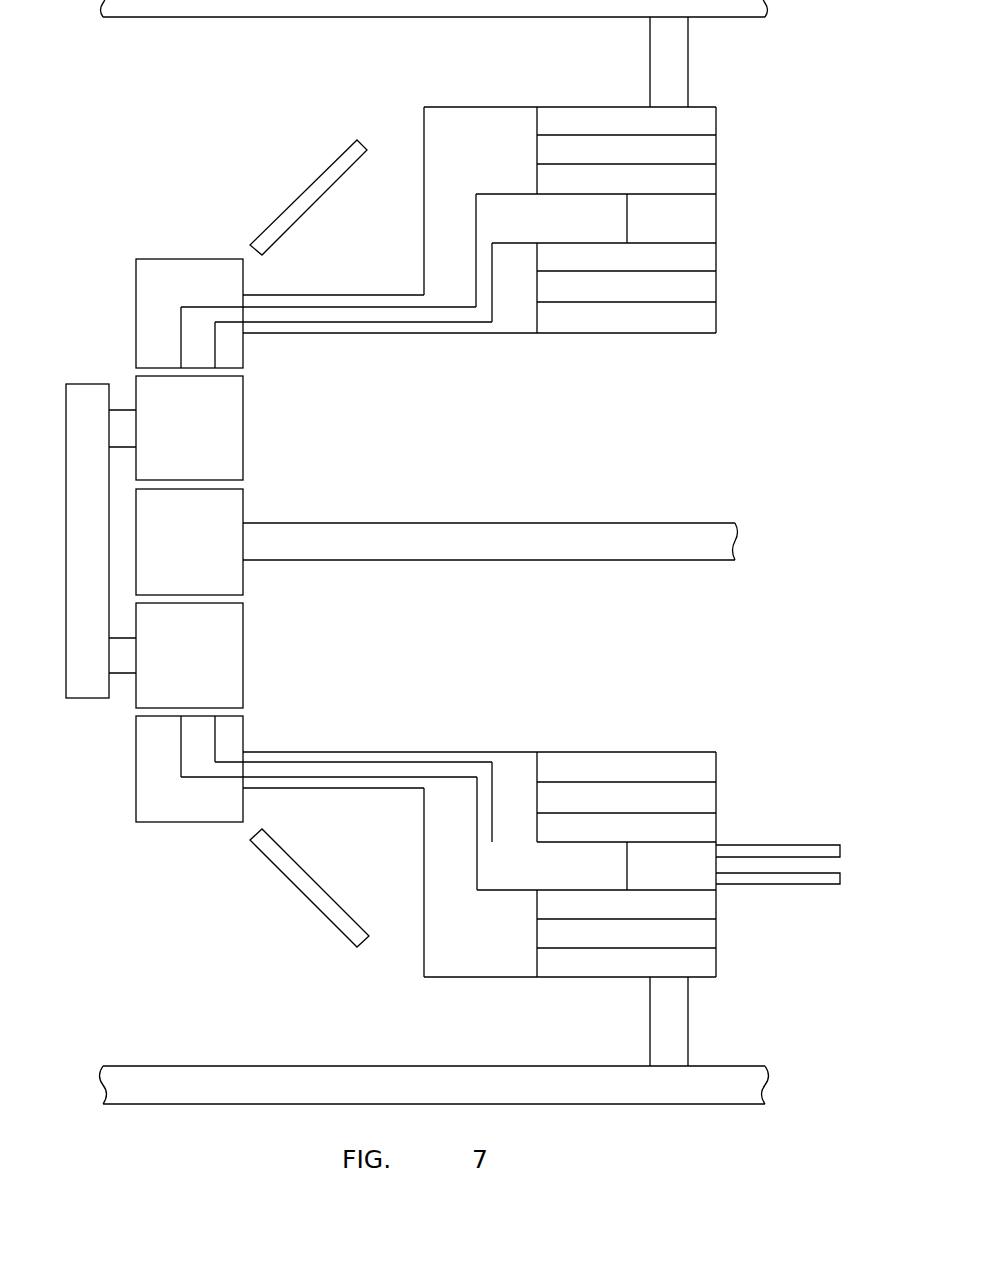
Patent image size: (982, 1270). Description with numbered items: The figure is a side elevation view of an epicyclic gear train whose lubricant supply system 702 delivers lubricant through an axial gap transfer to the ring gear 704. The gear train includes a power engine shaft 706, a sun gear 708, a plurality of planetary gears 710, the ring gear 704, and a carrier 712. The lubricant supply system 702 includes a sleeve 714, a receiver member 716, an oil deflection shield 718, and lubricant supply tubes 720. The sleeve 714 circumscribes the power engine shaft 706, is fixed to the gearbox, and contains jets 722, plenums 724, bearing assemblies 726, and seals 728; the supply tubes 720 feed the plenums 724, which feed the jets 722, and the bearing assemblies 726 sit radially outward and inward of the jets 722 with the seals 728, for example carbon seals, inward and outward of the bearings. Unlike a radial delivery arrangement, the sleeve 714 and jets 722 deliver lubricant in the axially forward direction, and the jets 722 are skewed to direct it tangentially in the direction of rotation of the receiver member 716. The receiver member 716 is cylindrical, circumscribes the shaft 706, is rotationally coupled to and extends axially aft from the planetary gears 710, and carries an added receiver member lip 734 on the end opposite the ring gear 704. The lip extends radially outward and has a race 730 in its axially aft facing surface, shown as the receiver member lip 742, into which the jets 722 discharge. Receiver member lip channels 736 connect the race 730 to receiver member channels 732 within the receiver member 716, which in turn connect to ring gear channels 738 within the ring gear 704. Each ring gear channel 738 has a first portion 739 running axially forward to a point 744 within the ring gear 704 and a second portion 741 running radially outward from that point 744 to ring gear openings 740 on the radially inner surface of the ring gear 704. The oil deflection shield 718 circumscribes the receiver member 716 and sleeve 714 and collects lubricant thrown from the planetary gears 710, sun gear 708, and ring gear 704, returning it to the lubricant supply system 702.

The lubricant supply system 702 is at (720, 742).
The ring gear 704 is at (189, 540).
The power engine shaft 706 is at (680, 537).
The sun gear 708 is at (189, 542).
The planetary gears 710 is at (189, 542).
The carrier 712 is at (88, 383).
The sleeve 714 is at (645, 340).
The receiver member 716 is at (420, 340).
The oil deflection shield 718 is at (302, 195).
The lubricant supply tubes 720 is at (755, 843).
The jets 722 is at (572, 213).
The plenums 724 is at (655, 217).
The bearing assemblies 726 is at (663, 154).
The seals 728 is at (680, 124).
The race 730 is at (502, 217).
The receiver member channels 732 is at (358, 312).
The receiver member lip 734 is at (470, 100).
The receiver member lip channels 736 is at (482, 275).
The ring gear channels 738 is at (227, 318).
The first portion 739 is at (292, 315).
The ring gear openings 740 is at (197, 370).
The second portion 741 is at (197, 340).
The receiver member lip 742 is at (542, 120).
The point 744 is at (177, 307).